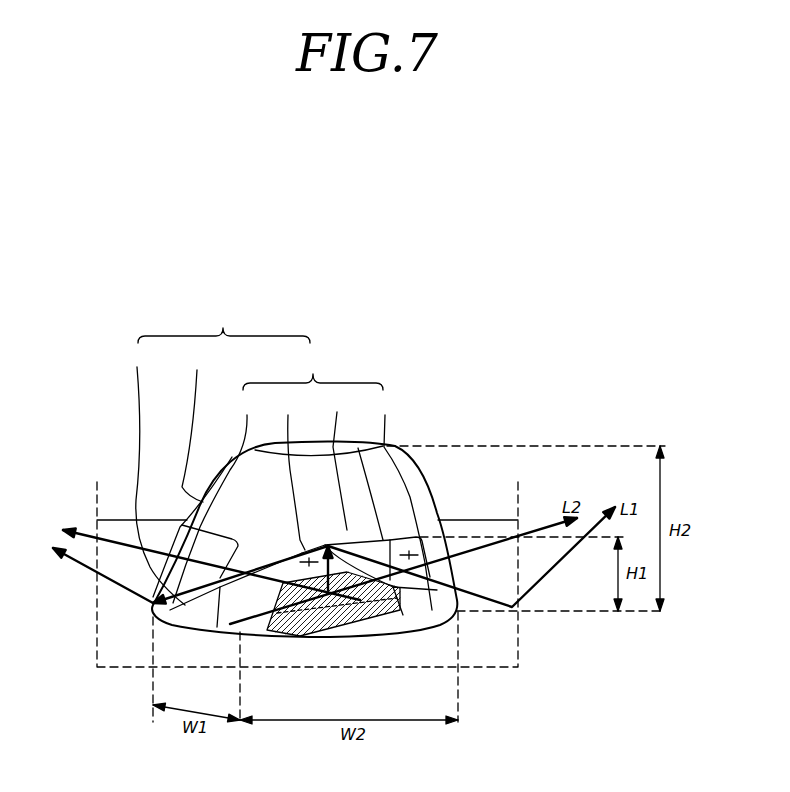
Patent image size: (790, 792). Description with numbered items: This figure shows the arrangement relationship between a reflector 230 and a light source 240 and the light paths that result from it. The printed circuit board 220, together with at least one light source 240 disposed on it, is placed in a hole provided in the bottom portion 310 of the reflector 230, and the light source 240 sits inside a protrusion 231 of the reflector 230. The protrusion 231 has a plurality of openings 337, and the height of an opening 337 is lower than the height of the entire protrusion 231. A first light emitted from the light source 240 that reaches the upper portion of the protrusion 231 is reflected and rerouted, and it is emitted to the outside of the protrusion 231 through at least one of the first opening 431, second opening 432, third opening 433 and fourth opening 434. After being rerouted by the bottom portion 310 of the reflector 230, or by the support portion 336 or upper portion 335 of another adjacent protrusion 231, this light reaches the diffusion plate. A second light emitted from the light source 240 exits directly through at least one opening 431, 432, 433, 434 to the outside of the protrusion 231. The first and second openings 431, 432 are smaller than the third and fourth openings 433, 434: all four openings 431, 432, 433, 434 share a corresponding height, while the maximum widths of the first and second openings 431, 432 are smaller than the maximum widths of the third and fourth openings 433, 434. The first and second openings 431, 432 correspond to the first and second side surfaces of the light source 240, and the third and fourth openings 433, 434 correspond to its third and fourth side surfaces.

The reflector 230 is at (492, 420).
The protrusion 231 is at (224, 450).
The upper portion 335 is at (204, 488).
The support portion 336 is at (152, 477).
The opening 337 is at (330, 457).
The first opening 431 is at (216, 499).
The second opening 432 is at (404, 505).
The third opening 433 is at (353, 468).
The fourth opening 434 is at (291, 473).
The bottom portion 310 is at (466, 528).
The light source 240 is at (335, 635).
The printed circuit board 220 is at (388, 632).